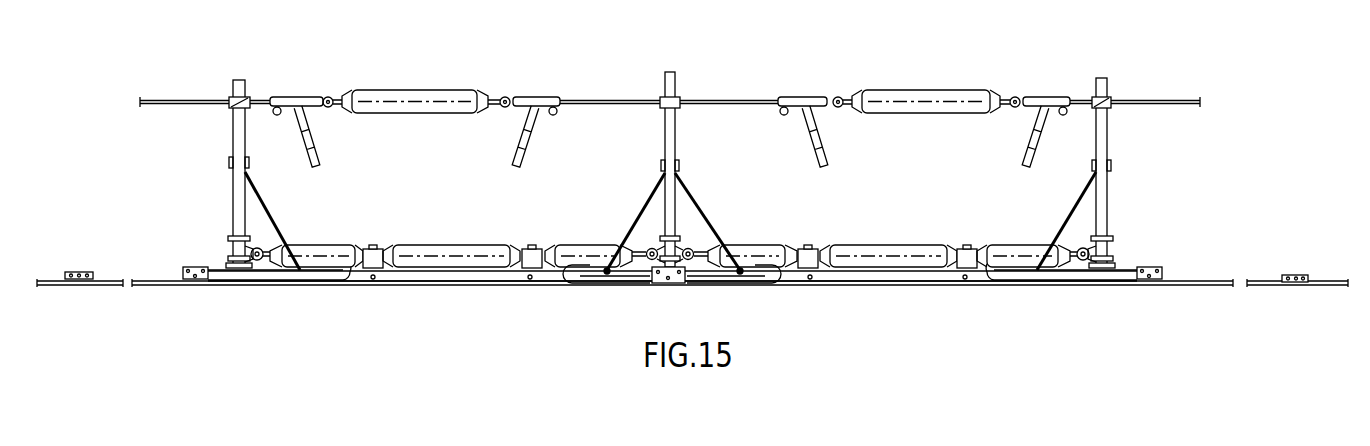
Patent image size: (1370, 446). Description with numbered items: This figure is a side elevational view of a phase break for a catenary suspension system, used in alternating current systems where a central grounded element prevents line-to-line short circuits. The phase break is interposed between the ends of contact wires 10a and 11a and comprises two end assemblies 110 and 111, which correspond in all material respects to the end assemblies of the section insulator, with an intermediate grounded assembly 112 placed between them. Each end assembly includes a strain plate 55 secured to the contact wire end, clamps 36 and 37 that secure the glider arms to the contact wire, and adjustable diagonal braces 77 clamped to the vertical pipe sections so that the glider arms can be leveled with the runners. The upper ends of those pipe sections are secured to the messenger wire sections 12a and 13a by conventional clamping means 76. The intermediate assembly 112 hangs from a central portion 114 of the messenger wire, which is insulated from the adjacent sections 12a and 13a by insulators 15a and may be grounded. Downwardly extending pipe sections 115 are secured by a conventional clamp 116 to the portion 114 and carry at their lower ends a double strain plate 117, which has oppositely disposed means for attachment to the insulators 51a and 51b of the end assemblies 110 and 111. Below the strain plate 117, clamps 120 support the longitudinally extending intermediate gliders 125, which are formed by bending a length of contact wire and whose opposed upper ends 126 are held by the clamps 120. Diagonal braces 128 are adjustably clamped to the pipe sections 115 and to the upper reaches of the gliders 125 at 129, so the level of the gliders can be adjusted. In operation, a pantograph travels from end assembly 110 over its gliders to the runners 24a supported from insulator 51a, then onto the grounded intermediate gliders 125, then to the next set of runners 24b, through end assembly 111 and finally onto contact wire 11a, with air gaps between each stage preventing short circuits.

The contact wire 10a is at (42, 278).
The contact wire 11a is at (1322, 280).
The messenger wire section 12a is at (150, 104).
The messenger wire section 13a is at (1166, 100).
The insulator 15a is at (426, 100).
The runners 24a is at (400, 278).
The runners 24b is at (877, 278).
The clamp 36 is at (92, 274).
The clamp 37 is at (192, 268).
The insulator 51a is at (579, 252).
The insulator 51b is at (760, 250).
The strain plate 55 is at (228, 248).
The clamping means 76 is at (248, 100).
The diagonal brace 77 is at (282, 248).
The end assembly 110 is at (251, 179).
The end assembly 111 is at (1079, 198).
The intermediate grounded assembly 112 is at (654, 191).
The central portion of messenger wire 114 is at (700, 100).
The pipe section 115 is at (676, 137).
The clamp 116 is at (662, 100).
The double strain plate 117 is at (690, 244).
The clamp 120 is at (673, 284).
The intermediate glider 125 is at (594, 285).
The opposed ends of glider upper reaches 126 is at (648, 286).
The diagonal brace 128 is at (634, 226).
The brace clamp location 129 is at (607, 276).